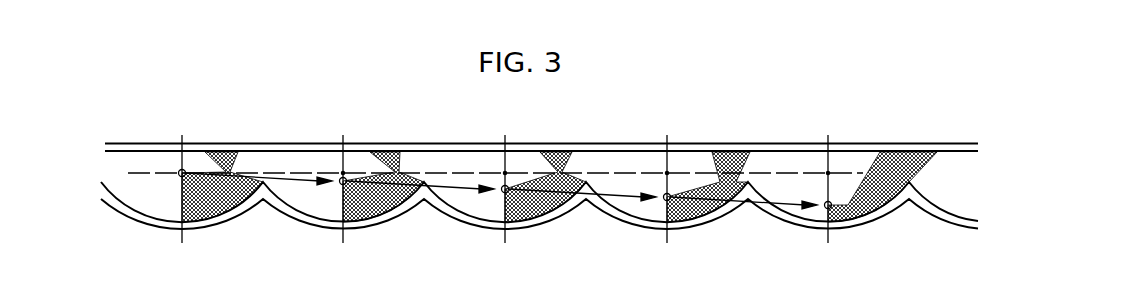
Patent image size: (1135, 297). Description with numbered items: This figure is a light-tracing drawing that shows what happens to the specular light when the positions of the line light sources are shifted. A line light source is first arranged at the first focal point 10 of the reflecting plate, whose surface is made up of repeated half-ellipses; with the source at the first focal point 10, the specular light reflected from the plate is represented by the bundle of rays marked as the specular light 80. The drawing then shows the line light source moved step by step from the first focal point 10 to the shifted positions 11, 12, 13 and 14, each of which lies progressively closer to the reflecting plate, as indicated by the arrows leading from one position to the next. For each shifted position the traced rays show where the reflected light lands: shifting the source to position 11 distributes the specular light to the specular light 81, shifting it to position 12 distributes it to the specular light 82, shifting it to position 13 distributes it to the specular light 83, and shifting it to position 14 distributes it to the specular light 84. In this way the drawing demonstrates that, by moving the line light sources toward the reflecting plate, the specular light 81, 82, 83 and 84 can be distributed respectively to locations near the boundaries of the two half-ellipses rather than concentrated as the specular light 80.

The first focal point 10 is at (182, 173).
The shifted light source position 11 is at (343, 181).
The shifted light source position 12 is at (505, 189).
The shifted light source position 13 is at (667, 197).
The shifted light source position 14 is at (828, 205).
The specular light 80 is at (200, 136).
The specular light 81 is at (368, 136).
The specular light 82 is at (540, 136).
The specular light 83 is at (710, 136).
The specular light 84 is at (878, 136).